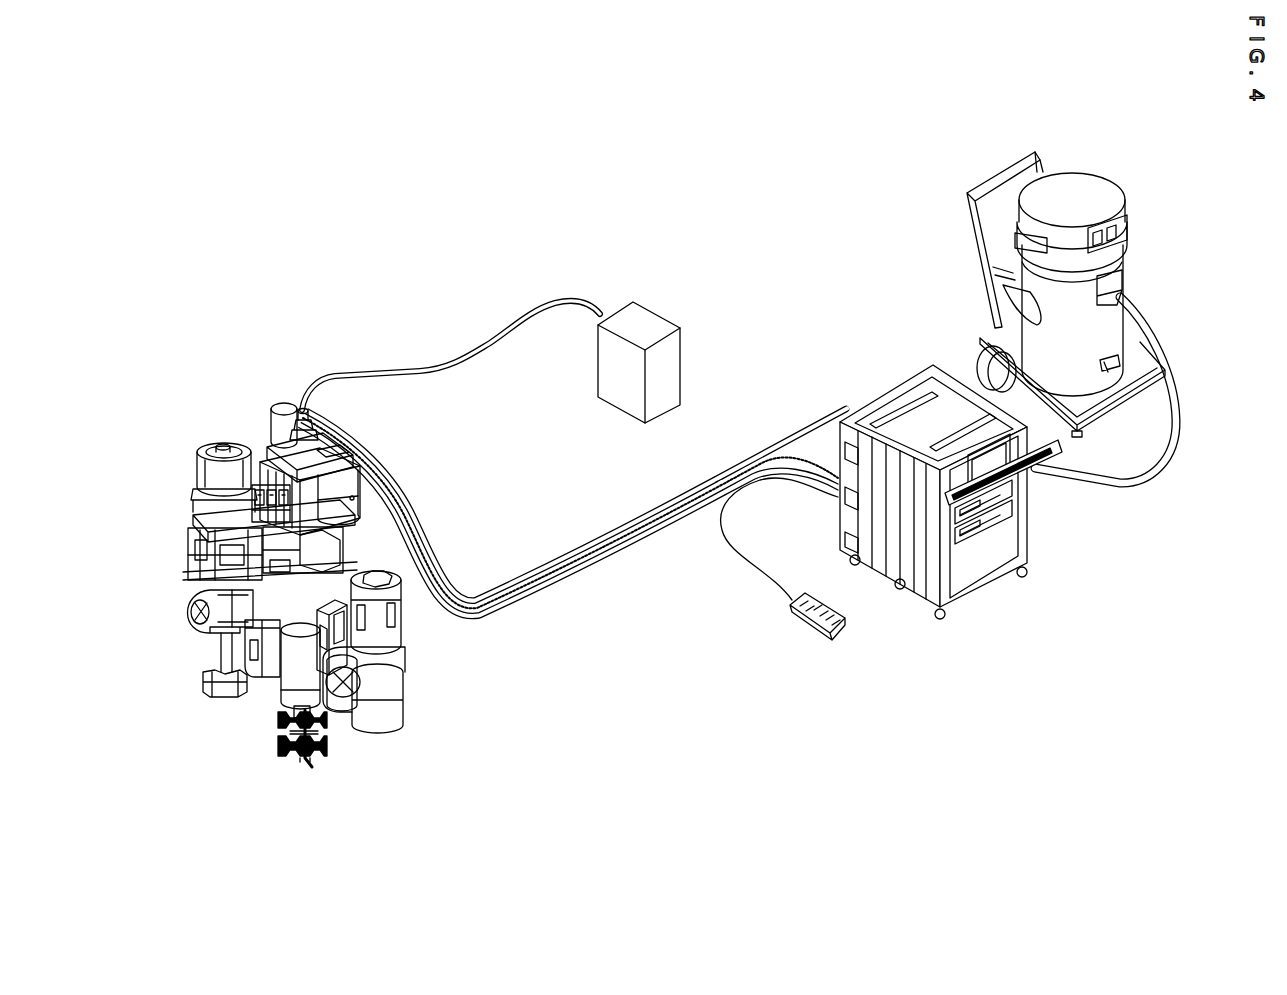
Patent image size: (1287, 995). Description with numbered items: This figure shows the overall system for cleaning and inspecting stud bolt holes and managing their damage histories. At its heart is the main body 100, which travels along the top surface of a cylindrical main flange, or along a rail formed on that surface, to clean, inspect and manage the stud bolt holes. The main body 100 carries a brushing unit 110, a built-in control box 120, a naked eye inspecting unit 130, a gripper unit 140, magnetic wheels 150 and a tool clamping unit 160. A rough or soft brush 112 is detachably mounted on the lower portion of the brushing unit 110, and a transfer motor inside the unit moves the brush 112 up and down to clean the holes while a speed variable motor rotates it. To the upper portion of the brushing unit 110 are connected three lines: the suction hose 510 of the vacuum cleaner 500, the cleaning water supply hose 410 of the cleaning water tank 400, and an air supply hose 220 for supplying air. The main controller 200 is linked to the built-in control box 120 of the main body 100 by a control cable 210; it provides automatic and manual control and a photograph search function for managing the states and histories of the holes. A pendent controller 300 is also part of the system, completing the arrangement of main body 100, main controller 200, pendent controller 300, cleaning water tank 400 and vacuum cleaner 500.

The main body 100 is at (302, 613).
The brushing unit 110 is at (270, 432).
The brush 112 is at (335, 748).
The built-in control box 120 is at (352, 497).
The naked eye inspecting unit 130 is at (198, 472).
The gripper unit 140 is at (403, 606).
The magnetic wheels 150 is at (195, 640).
The tool clamping unit 160 is at (200, 546).
The main controller 200 is at (915, 604).
The control cable 210 is at (621, 532).
The air supply hose 220 is at (623, 553).
The pendent controller 300 is at (800, 612).
The cleaning water tank 400 is at (648, 310).
The cleaning water supply hose 410 is at (482, 347).
The vacuum cleaner 500 is at (1085, 195).
The suction hose 510 is at (580, 545).